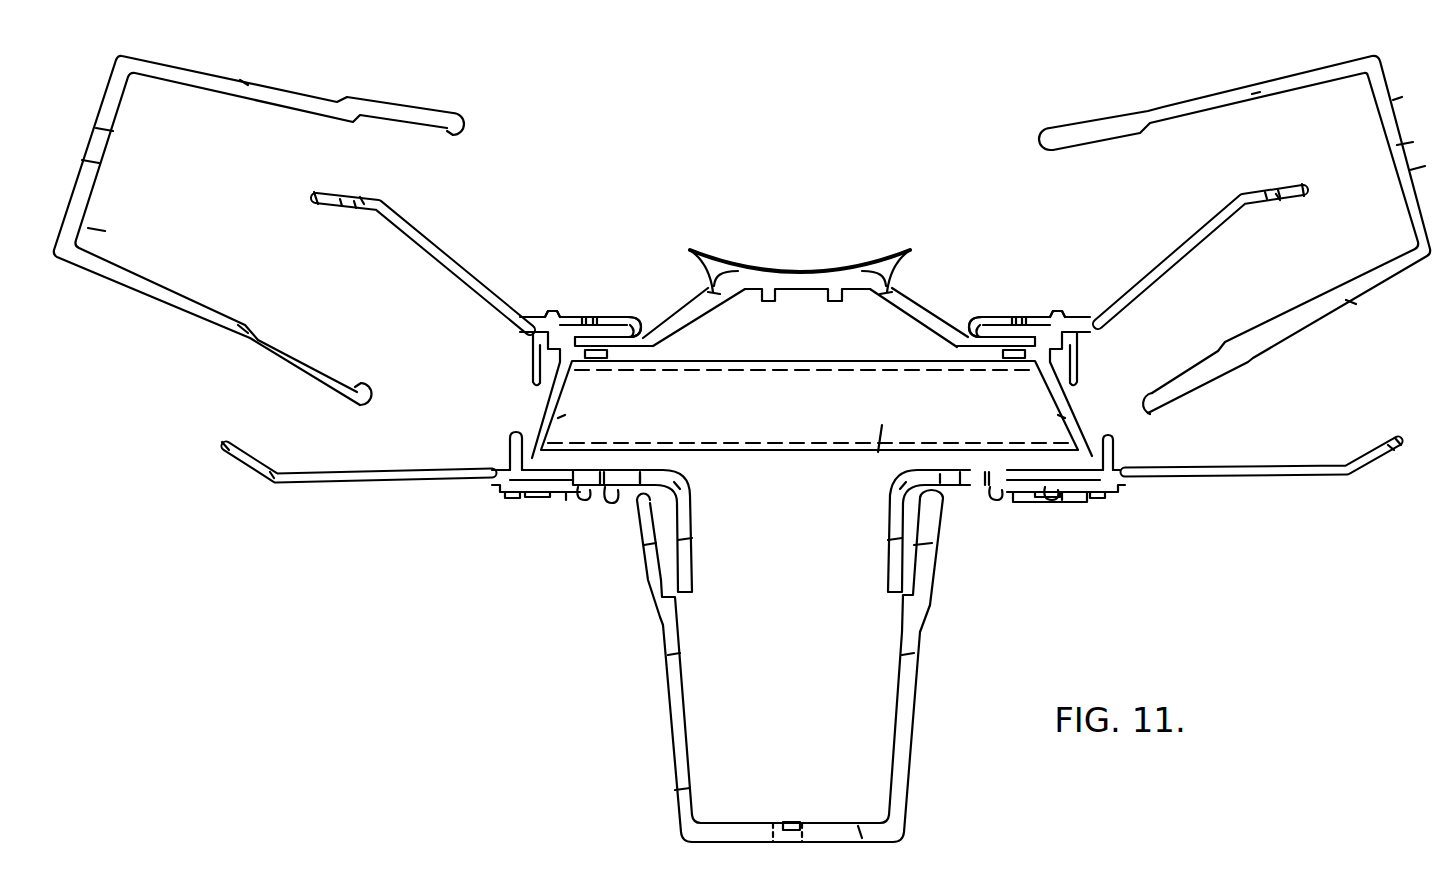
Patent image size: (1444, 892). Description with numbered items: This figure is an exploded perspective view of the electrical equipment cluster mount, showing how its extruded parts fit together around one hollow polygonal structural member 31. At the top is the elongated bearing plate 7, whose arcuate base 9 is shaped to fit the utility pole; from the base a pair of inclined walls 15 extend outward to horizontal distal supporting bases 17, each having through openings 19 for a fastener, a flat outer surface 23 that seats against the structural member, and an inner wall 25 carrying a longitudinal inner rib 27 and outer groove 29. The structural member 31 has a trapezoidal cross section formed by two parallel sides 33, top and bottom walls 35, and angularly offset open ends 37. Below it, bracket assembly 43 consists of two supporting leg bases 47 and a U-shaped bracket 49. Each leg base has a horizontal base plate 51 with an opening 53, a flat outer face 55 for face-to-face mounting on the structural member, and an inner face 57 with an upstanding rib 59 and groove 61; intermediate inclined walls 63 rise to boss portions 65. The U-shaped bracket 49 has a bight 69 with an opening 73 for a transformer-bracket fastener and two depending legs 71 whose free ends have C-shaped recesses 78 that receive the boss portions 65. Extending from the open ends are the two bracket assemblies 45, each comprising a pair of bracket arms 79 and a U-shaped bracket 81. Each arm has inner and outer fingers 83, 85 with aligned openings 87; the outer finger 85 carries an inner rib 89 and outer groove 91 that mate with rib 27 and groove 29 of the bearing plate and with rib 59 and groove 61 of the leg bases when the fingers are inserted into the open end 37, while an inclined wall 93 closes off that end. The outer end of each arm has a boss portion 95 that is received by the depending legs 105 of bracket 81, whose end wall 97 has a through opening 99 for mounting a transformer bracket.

The elongated bearing plate 7 is at (954, 287).
The arcuate base 9 is at (880, 254).
The inclined walls 15 is at (714, 293).
The distal supporting base 17 is at (805, 336).
The through openings 19 is at (609, 320).
The outer surface 23 is at (596, 360).
The inner wall 25 is at (633, 330).
The inner rib 27 is at (655, 320).
The outer groove 29 is at (584, 332).
The hollow polygonal structural member 31 is at (817, 461).
The parallel sides 33 is at (783, 362).
The top and bottom wall 35 is at (880, 430).
The angularly offset open sides 37 is at (562, 418).
The bracket assembly 43 is at (660, 746).
The bracket assembly 45 is at (477, 242).
The supporting leg base 47 is at (690, 526).
The U-shaped bracket 49 is at (673, 801).
The base plate 51 is at (808, 471).
The opening 53 is at (602, 470).
The outer face 55 is at (642, 470).
The inner face 57 is at (1037, 505).
The inner upstanding rib 59 is at (690, 486).
The outer groove 61 is at (584, 502).
The intermediate inclined walls 63 is at (672, 478).
The inclined wall or boss portion 65 is at (692, 545).
The bight or end wall 69 is at (862, 838).
The depending legs 71 is at (668, 664).
The opening 73 is at (795, 822).
The C-shaped recess 78 is at (645, 565).
The bracket arm 79 is at (1200, 220).
The U-shaped bracket 81 is at (178, 319).
The inner finger 83 is at (553, 412).
The outer finger 85 is at (550, 316).
The aligned openings 87 is at (585, 316).
The inner rib 89 is at (540, 337).
The outer groove 91 is at (625, 318).
The inclined wall 93 is at (531, 377).
The inclined wall or boss portion 95 is at (362, 200).
The end wall 97 is at (108, 118).
The through opening 99 is at (98, 170).
The depending legs 105 is at (248, 84).